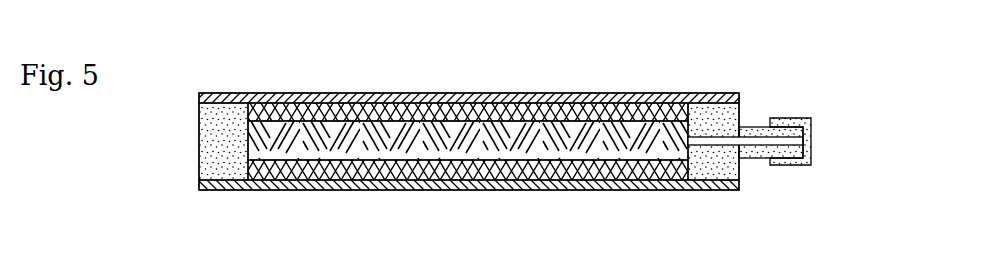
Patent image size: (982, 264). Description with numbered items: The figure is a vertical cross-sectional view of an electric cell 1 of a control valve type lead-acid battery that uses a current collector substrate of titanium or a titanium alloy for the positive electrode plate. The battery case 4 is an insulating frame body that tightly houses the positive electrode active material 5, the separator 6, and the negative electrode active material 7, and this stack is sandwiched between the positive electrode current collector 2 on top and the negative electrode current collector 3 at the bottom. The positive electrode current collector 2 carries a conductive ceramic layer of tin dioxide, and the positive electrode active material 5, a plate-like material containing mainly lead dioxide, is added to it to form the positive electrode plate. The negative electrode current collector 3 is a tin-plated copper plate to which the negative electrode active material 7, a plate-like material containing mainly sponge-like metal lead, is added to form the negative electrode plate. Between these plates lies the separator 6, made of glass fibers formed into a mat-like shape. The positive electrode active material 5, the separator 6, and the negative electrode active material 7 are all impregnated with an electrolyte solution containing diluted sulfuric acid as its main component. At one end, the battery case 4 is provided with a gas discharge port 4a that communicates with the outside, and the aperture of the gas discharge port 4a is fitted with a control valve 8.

The electric cell 1 is at (745, 90).
The positive electrode current collector 2 is at (343, 95).
The negative electrode current collector 3 is at (475, 188).
The battery case 4 is at (220, 140).
The gas discharge port 4a is at (748, 146).
The positive electrode active material 5 is at (427, 102).
The separator 6 is at (493, 118).
The negative electrode active material 7 is at (405, 168).
The control valve 8 is at (812, 140).